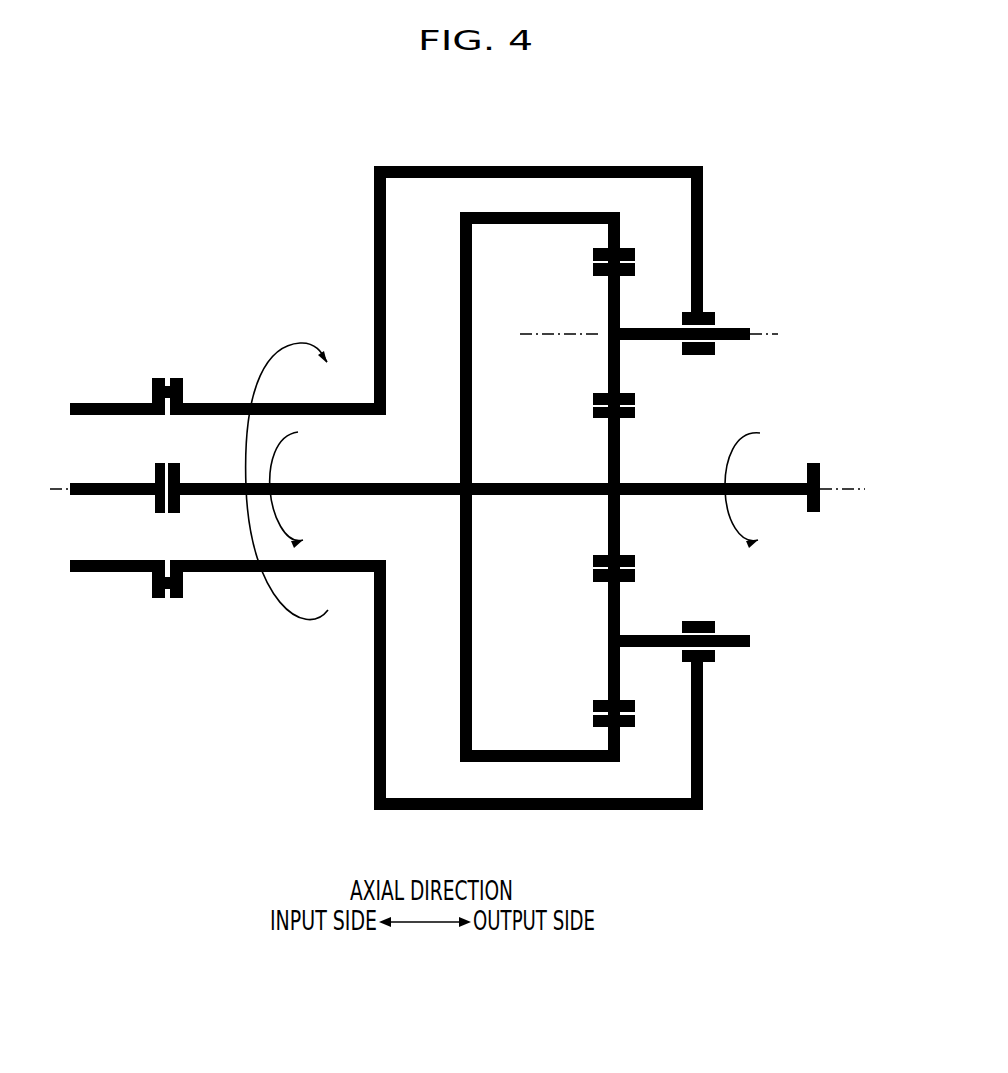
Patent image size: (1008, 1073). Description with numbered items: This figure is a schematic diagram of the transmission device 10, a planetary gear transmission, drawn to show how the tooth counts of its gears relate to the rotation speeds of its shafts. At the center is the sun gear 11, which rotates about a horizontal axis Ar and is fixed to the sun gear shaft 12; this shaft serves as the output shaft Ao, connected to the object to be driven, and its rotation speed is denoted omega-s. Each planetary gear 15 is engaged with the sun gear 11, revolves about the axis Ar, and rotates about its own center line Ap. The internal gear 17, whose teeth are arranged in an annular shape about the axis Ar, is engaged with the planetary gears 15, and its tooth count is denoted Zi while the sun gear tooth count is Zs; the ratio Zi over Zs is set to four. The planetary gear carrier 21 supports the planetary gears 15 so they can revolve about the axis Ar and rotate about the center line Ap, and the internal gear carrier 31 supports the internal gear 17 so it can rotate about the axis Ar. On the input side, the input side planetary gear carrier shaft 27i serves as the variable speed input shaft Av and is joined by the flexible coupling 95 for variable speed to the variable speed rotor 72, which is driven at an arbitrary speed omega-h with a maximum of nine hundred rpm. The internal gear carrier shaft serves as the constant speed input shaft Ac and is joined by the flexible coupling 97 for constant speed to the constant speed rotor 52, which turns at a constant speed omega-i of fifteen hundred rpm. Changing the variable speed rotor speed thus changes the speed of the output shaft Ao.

The transmission device 10 is at (466, 460).
The planetary gear carrier 21 is at (443, 166).
The internal gear carrier 31 is at (578, 762).
The internal gear 17 is at (625, 248).
The number of teeth of the internal gear Zi is at (593, 251).
The sun gear 11 is at (620, 435).
The number of teeth of the sun gear Zs is at (593, 415).
The planetary gears 15 is at (620, 292).
The center line of the planetary gears Ap is at (775, 333).
The variable speed rotor 72 is at (125, 454).
The flexible coupling for variable speed 95 is at (112, 403).
The variable speed input shaft Av is at (264, 401).
The input side planetary gear carrier shaft 27i is at (212, 403).
The constant speed rotor 52 is at (180, 562).
The flexible coupling for constant speed 97 is at (103, 495).
The constant speed input shaft Ac is at (366, 603).
The output shaft Ao is at (656, 448).
The sun gear shaft 12 is at (680, 482).
The axis Ar is at (855, 489).